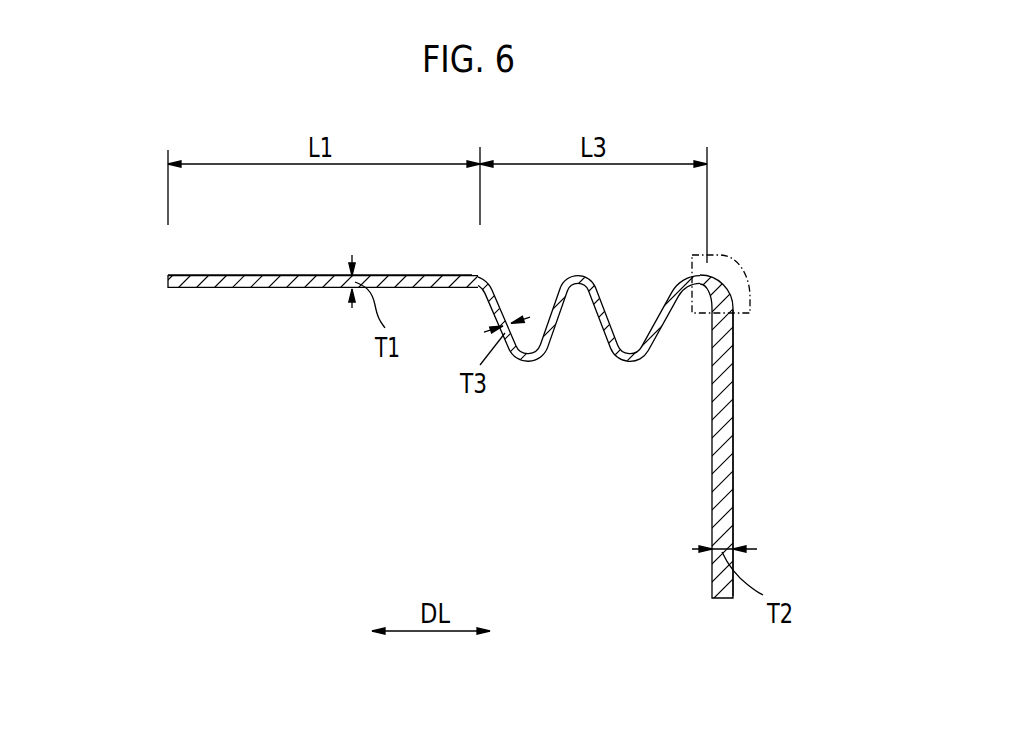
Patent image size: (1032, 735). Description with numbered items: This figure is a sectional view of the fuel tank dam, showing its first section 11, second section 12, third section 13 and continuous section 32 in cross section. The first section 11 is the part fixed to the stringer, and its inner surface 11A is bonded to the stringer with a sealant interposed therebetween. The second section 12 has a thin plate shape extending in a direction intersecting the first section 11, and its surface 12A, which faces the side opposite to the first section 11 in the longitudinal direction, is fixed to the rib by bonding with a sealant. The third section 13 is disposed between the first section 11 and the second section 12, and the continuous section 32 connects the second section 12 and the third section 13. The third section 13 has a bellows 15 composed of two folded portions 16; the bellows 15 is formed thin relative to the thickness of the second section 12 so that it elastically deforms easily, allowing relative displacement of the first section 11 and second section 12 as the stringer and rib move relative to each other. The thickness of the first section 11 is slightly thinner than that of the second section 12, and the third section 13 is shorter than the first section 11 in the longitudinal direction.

The first section 11 is at (245, 290).
The inner surface 11A is at (207, 275).
The second section 12 is at (735, 488).
The surface 12A is at (735, 378).
The third section 13 is at (575, 390).
The bellows 15 is at (630, 363).
The folded portions 16 is at (575, 390).
The continuous section 32 is at (738, 267).